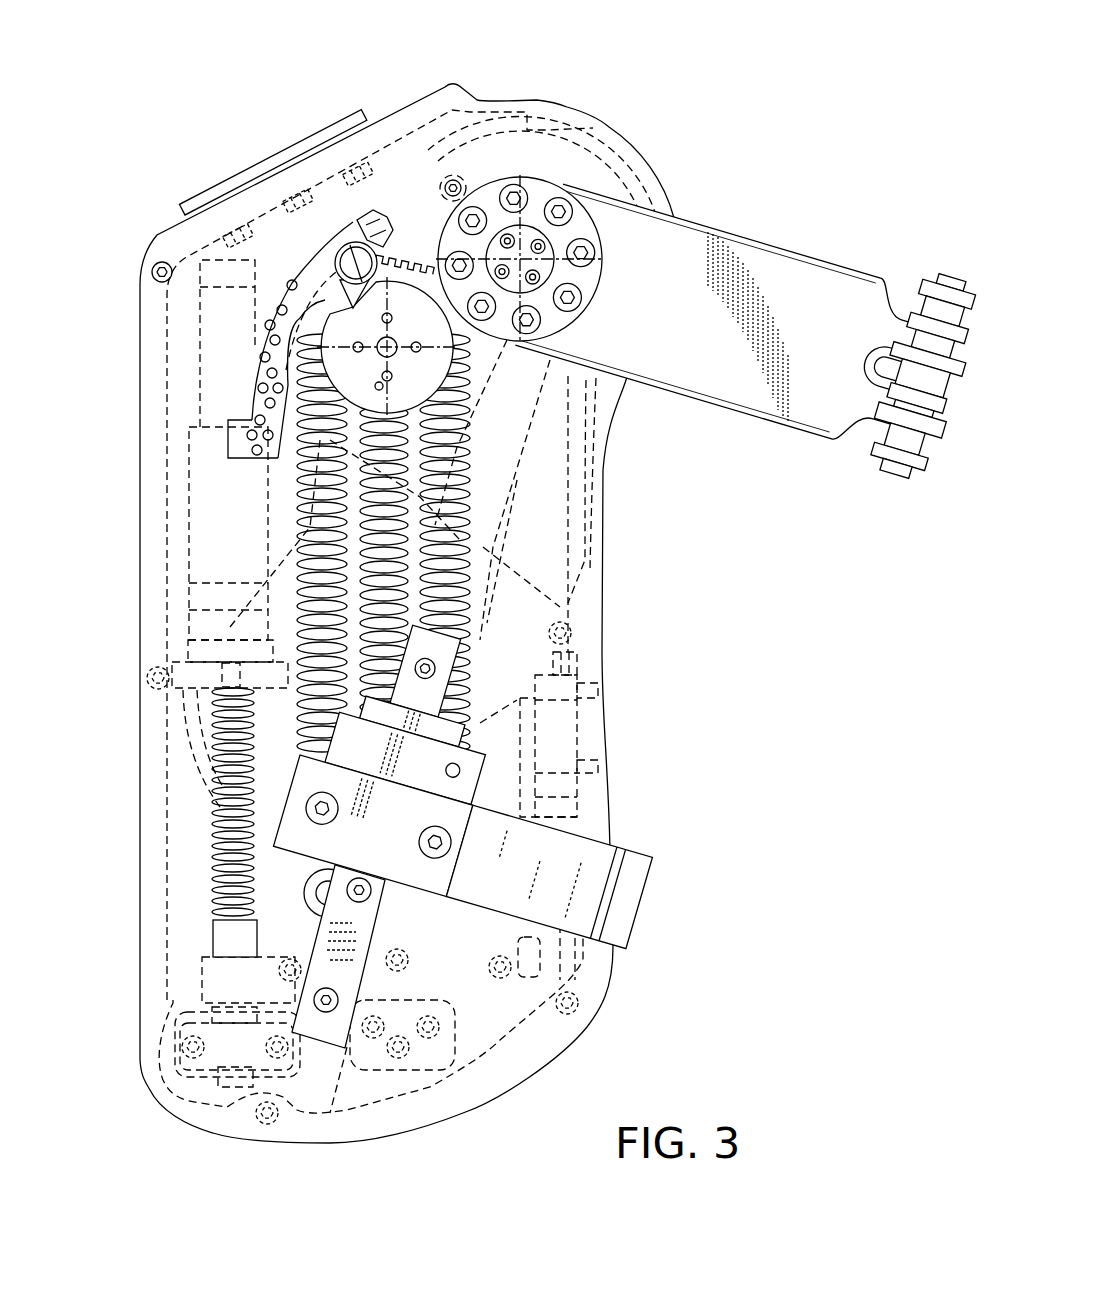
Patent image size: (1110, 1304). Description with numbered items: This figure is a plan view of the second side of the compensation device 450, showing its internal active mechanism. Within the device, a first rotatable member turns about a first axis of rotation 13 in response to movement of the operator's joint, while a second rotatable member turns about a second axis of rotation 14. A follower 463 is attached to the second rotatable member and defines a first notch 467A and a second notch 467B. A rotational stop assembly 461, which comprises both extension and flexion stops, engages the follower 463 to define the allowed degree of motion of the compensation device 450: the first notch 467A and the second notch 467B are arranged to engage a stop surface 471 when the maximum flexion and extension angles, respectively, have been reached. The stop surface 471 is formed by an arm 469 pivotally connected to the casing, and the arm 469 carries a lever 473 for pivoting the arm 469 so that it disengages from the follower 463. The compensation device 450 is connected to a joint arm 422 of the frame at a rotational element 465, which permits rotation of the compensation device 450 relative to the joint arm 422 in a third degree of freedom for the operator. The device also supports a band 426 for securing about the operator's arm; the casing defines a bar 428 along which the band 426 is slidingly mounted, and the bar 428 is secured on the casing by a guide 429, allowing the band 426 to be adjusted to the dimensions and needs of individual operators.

The compensation device 450 is at (137, 820).
The rotational stop assembly 461 is at (254, 308).
The arm 469 is at (266, 340).
The lever 473 is at (262, 366).
The follower 463 is at (380, 392).
The first notch 467A is at (357, 257).
The second notch 467B is at (378, 386).
The stop surface 471 is at (340, 275).
The second axis of rotation 14 is at (425, 258).
The first axis of rotation 13 is at (528, 228).
The rotational element 465 is at (537, 230).
The joint arm 422 is at (778, 282).
The bar 428 is at (440, 695).
The guide 429 is at (430, 757).
The band 426 is at (623, 905).